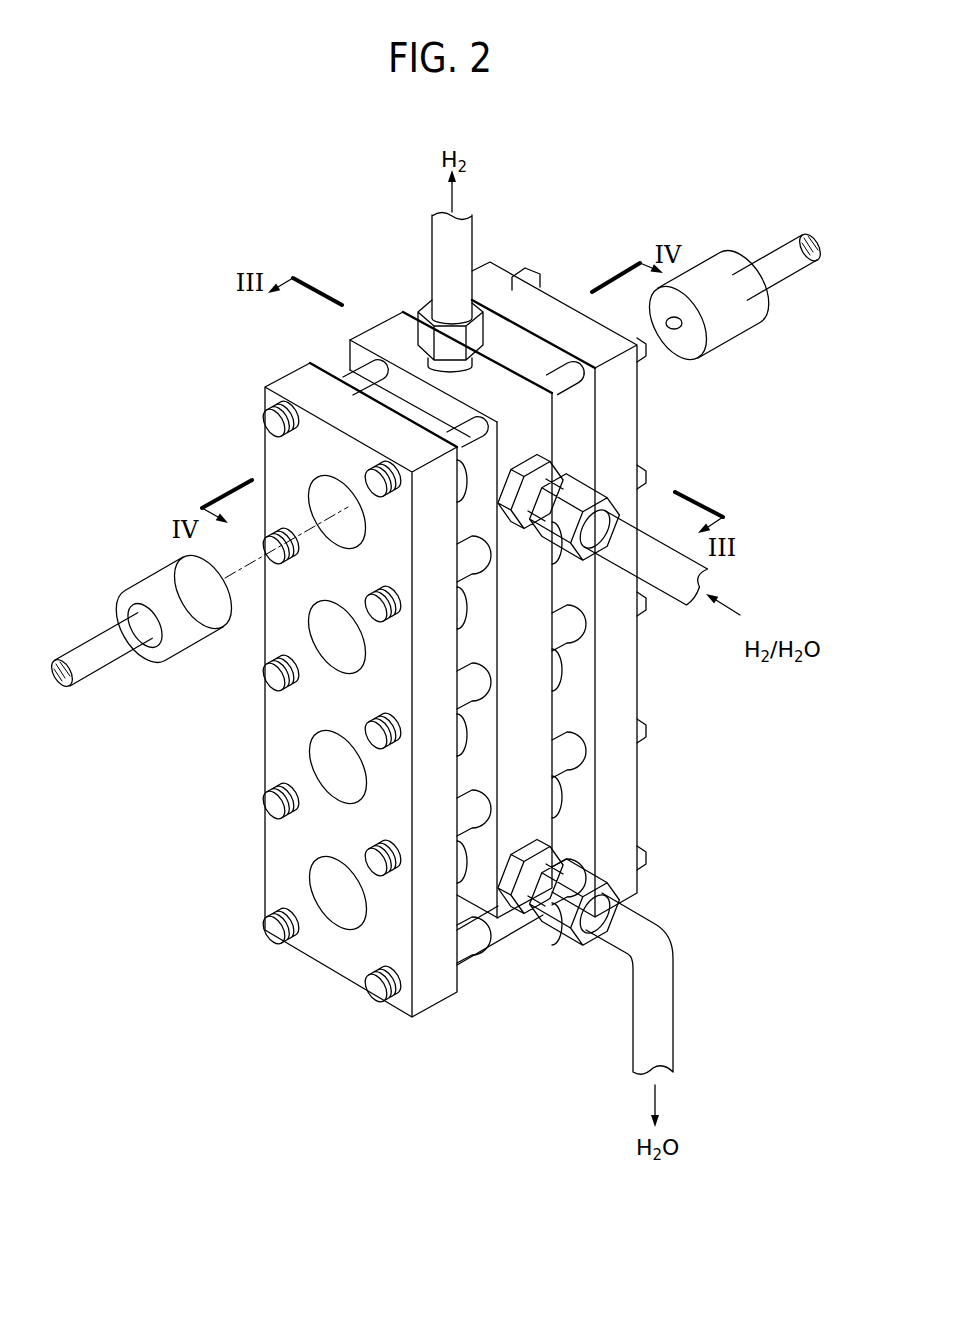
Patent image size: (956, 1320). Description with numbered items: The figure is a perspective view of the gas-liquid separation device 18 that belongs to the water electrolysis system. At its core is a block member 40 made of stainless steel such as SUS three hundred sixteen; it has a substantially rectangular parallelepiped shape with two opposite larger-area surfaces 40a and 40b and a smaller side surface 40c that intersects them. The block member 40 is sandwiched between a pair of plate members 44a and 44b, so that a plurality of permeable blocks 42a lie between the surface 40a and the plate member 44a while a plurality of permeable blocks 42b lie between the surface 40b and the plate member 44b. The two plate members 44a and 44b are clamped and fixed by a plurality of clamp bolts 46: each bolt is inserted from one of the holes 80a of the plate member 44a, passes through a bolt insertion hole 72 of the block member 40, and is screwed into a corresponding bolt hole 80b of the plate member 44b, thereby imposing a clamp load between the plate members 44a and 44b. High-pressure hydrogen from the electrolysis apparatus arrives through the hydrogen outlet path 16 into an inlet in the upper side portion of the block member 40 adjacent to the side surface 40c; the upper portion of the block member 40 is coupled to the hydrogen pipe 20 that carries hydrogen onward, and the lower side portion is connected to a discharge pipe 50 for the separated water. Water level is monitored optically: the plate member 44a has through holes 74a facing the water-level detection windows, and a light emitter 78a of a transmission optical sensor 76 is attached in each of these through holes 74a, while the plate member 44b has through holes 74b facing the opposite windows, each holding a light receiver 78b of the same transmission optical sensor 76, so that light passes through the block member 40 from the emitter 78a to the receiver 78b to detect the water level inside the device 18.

The hydrogen outlet path 16 is at (668, 585).
The gas-liquid separation device 18 is at (509, 125).
The hydrogen pipe 20 is at (442, 258).
The block member 40 is at (491, 598).
The surface 40a is at (505, 372).
The surface 40b is at (393, 377).
The side surface 40c is at (537, 437).
The permeable blocks 42a is at (532, 355).
The permeable blocks 42b is at (440, 403).
The plate member 44a is at (638, 423).
The plate member 44b is at (309, 690).
The clamp bolts 46 is at (534, 280).
The discharge pipe 50 is at (675, 1002).
The bolt insertion holes 72 is at (472, 430).
The through holes 74a is at (323, 757).
The through holes 74b is at (269, 615).
The transmission optical sensor 76 is at (731, 288).
The light emitter 78a is at (727, 322).
The light receiver 78b is at (164, 583).
The holes 80a is at (574, 378).
The bolt holes 80b is at (387, 500).